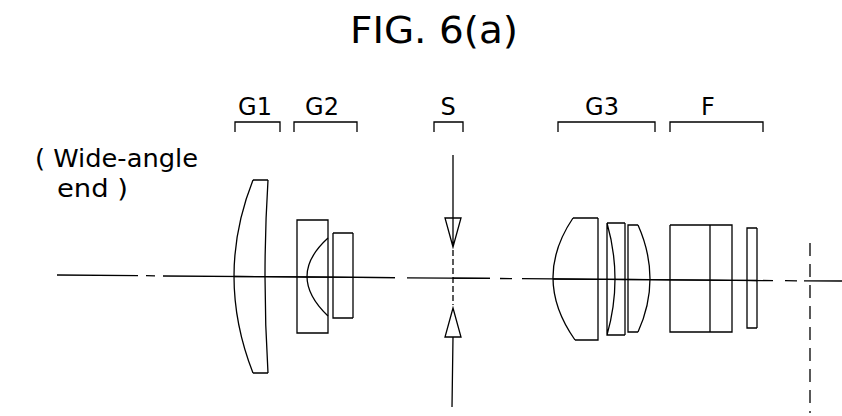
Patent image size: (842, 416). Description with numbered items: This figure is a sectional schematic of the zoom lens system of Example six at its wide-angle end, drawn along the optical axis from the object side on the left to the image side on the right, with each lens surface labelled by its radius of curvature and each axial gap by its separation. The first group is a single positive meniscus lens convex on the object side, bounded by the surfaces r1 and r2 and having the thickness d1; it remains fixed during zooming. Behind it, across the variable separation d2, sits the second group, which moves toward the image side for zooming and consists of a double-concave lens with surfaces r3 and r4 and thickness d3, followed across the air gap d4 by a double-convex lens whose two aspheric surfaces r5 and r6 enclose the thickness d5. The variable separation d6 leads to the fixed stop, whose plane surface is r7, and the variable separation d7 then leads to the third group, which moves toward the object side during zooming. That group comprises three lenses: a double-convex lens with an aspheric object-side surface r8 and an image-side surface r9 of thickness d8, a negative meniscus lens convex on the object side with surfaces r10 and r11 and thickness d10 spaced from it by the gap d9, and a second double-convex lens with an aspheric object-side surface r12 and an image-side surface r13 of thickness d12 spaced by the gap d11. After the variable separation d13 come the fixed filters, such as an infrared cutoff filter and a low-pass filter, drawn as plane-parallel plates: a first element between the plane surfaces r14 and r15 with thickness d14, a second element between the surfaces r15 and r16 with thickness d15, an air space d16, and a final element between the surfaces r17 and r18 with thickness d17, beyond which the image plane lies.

The radius of curvature of the first lens surface r1 is at (250, 192).
The radius of curvature of the second lens surface r2 is at (267, 200).
The radius of curvature of the third lens surface r3 is at (297, 250).
The radius of curvature of the fourth lens surface r4 is at (310, 255).
The radius of curvature of the fifth lens surface r5 is at (343, 276).
The radius of curvature of the sixth lens surface r6 is at (354, 272).
The radius of curvature of the stop surface r7 is at (451, 268).
The radius of curvature of the eighth lens surface r8 is at (558, 245).
The radius of curvature of the ninth lens surface r9 is at (597, 248).
The radius of curvature of the tenth lens surface r10 is at (605, 258).
The radius of curvature of the eleventh lens surface r11 is at (618, 255).
The radius of curvature of the twelfth lens surface r12 is at (632, 255).
The radius of curvature of the thirteenth lens surface r13 is at (652, 250).
The radius of curvature of the fourteenth surface r14 is at (667, 243).
The radius of curvature of the fifteenth surface r15 is at (704, 243).
The radius of curvature of the sixteenth surface r16 is at (738, 243).
The radius of curvature of the seventeenth surface r17 is at (748, 240).
The radius of curvature of the eighteenth surface r18 is at (758, 246).
The first lens surface separation d1 is at (253, 278).
The second lens surface separation d2 is at (281, 278).
The third lens surface separation d3 is at (301, 278).
The fourth lens surface separation d4 is at (309, 280).
The fifth lens surface separation d5 is at (344, 280).
The sixth lens surface separation d6 is at (392, 282).
The seventh lens surface separation d7 is at (495, 282).
The eighth lens surface separation d8 is at (578, 283).
The ninth lens surface separation d9 is at (600, 283).
The tenth lens surface separation d10 is at (605, 283).
The eleventh lens surface separation d11 is at (630, 283).
The twelfth lens surface separation d12 is at (637, 283).
The thirteenth lens surface separation d13 is at (657, 283).
The fourteenth surface separation d14 is at (688, 283).
The fifteenth surface separation d15 is at (720, 283).
The sixteenth surface separation d16 is at (738, 283).
The seventeenth surface separation d17 is at (753, 283).